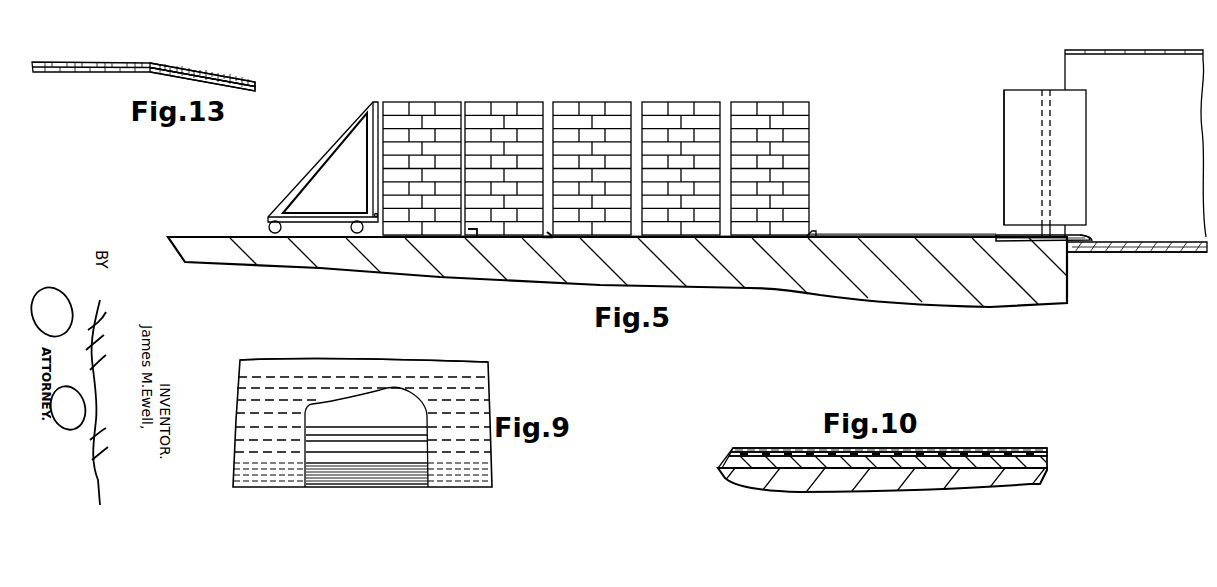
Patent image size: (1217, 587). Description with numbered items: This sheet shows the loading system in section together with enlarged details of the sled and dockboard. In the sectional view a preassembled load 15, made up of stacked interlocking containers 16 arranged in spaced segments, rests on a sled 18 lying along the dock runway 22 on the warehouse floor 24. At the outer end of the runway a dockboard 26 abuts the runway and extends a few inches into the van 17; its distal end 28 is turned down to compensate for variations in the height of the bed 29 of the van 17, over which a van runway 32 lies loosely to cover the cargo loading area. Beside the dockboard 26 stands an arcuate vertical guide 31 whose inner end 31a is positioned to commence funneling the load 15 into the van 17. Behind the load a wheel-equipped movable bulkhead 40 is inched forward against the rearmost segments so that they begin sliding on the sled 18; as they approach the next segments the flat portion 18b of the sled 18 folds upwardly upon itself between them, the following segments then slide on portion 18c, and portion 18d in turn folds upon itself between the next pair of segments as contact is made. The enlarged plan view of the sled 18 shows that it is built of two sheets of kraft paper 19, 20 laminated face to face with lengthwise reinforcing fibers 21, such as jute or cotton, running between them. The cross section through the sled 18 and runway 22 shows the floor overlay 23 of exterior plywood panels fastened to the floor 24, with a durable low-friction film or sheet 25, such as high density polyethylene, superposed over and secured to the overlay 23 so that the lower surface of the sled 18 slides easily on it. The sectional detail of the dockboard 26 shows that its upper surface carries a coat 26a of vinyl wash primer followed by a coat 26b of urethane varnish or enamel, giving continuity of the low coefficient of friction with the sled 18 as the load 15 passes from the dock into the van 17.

In FIG. 5, the preassembled load 15 is at (593, 101).
In FIG. 5, the containers 16 is at (427, 101).
In FIG. 5, the van 17 is at (1141, 49).
In FIG. 5, the sled 18 is at (423, 240).
In FIG. 9, the sled 18 is at (330, 355).
In FIG. 10, the sled 18 is at (1098, 465).
In FIG. 5, the sled portion 18b is at (475, 239).
In FIG. 5, the sled portion 18c is at (520, 239).
In FIG. 5, the sled portion 18d is at (550, 239).
In FIG. 9, the kraft paper sheet 19 is at (473, 370).
In FIG. 10, the kraft paper sheet 19 is at (1002, 452).
In FIG. 9, the kraft paper sheet 20 is at (395, 456).
In FIG. 10, the kraft paper sheet 20 is at (1048, 452).
In FIG. 9, the reinforcing fibers 21 is at (349, 452).
In FIG. 5, the dock runway 22 is at (897, 233).
In FIG. 10, the dock runway 22 is at (1085, 495).
In FIG. 10, the floor overlay 23 is at (1017, 463).
In FIG. 5, the floor 24 is at (935, 292).
In FIG. 10, the floor 24 is at (897, 489).
In FIG. 10, the film or sheet 25 is at (1048, 455).
In FIG. 13, the dockboard 26 is at (107, 76).
In FIG. 5, the dockboard 26 is at (1001, 234).
In FIG. 13, the coat of vinyl wash primer 26a is at (232, 80).
In FIG. 13, the coat of urethane varnish or enamel 26b is at (202, 72).
In FIG. 5, the distal end 28 is at (1091, 238).
In FIG. 5, the bed 29 is at (1131, 253).
In FIG. 5, the vertical guide 31 is at (1033, 178).
In FIG. 5, the inner end 31a is at (1004, 133).
In FIG. 5, the van runway 32 is at (1131, 241).
In FIG. 5, the movable bulkhead 40 is at (322, 163).